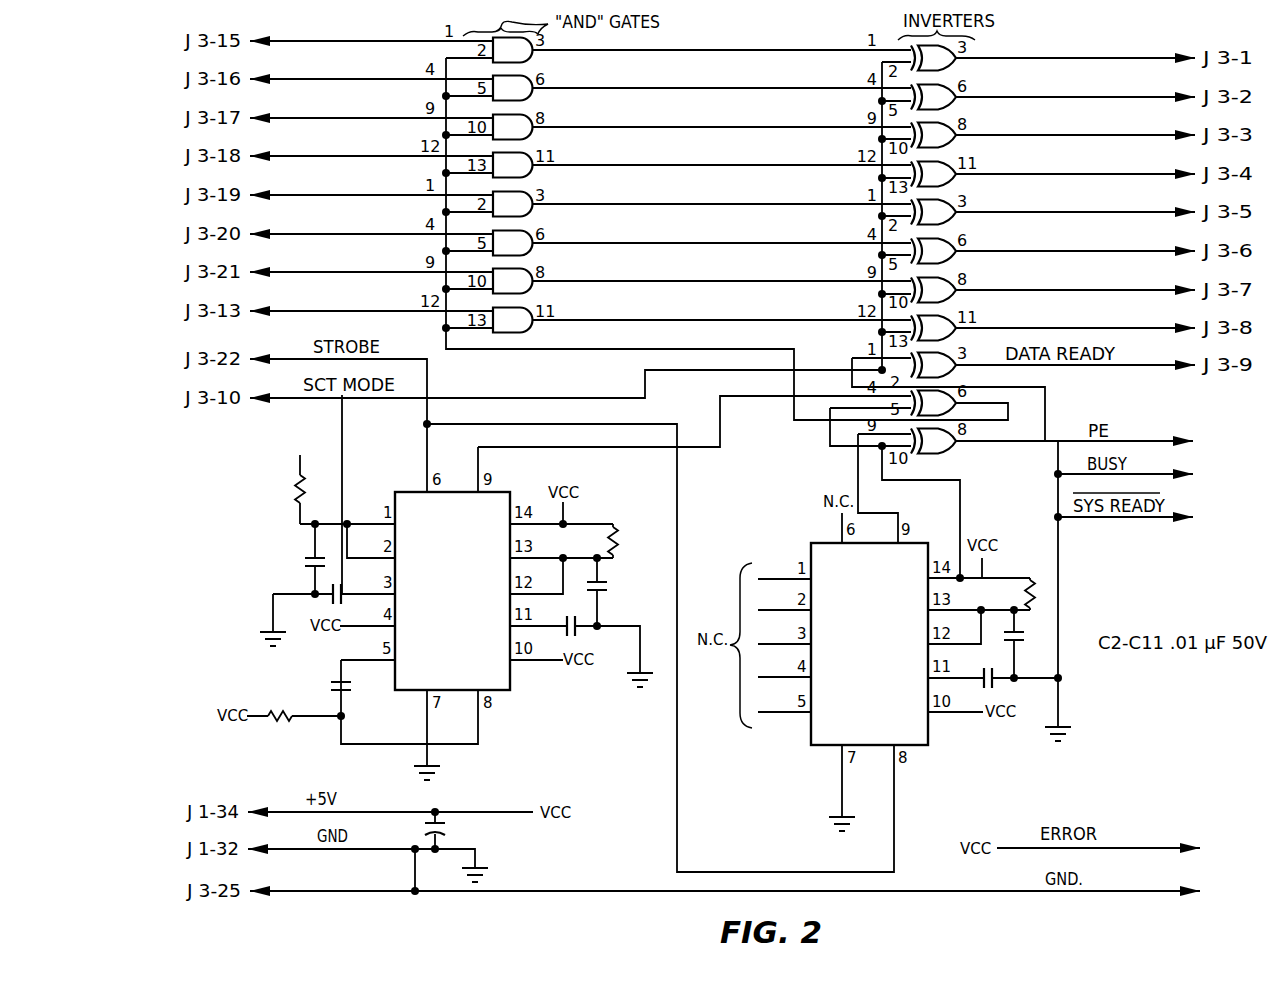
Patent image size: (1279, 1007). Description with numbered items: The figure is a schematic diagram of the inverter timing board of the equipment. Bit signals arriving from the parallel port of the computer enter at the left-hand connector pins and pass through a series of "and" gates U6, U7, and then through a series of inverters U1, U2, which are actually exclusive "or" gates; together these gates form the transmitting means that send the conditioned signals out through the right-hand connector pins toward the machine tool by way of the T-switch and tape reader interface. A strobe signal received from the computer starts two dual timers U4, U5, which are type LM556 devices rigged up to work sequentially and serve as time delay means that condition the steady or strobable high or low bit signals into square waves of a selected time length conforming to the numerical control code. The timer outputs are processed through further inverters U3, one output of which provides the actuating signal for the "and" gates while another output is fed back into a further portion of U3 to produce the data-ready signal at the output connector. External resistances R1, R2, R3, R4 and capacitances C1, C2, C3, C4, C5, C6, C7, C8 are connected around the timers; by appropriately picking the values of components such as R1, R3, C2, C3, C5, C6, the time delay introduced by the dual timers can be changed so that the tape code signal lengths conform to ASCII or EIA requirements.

The "and" gate U6 is at (513, 108).
The "and" gate U7 is at (513, 262).
The inverter (exclusive "or" gate) U1 is at (933, 116).
The inverter (exclusive "or" gate) U2 is at (933, 270).
The inverter U3 is at (933, 403).
The dual timer U4 is at (452, 591).
The dual timer U5 is at (869, 644).
The resistance R1 is at (302, 489).
The resistance R2 is at (277, 736).
The resistance R3 is at (629, 543).
The resistance R4 is at (1031, 572).
The capacitance C1 is at (449, 834).
The capacitance C2 is at (298, 562).
The capacitance C3 is at (347, 585).
The capacitance C4 is at (325, 684).
The capacitance C5 is at (609, 592).
The capacitance C6 is at (568, 616).
The capacitance C7 is at (1022, 647).
The capacitance C8 is at (987, 670).